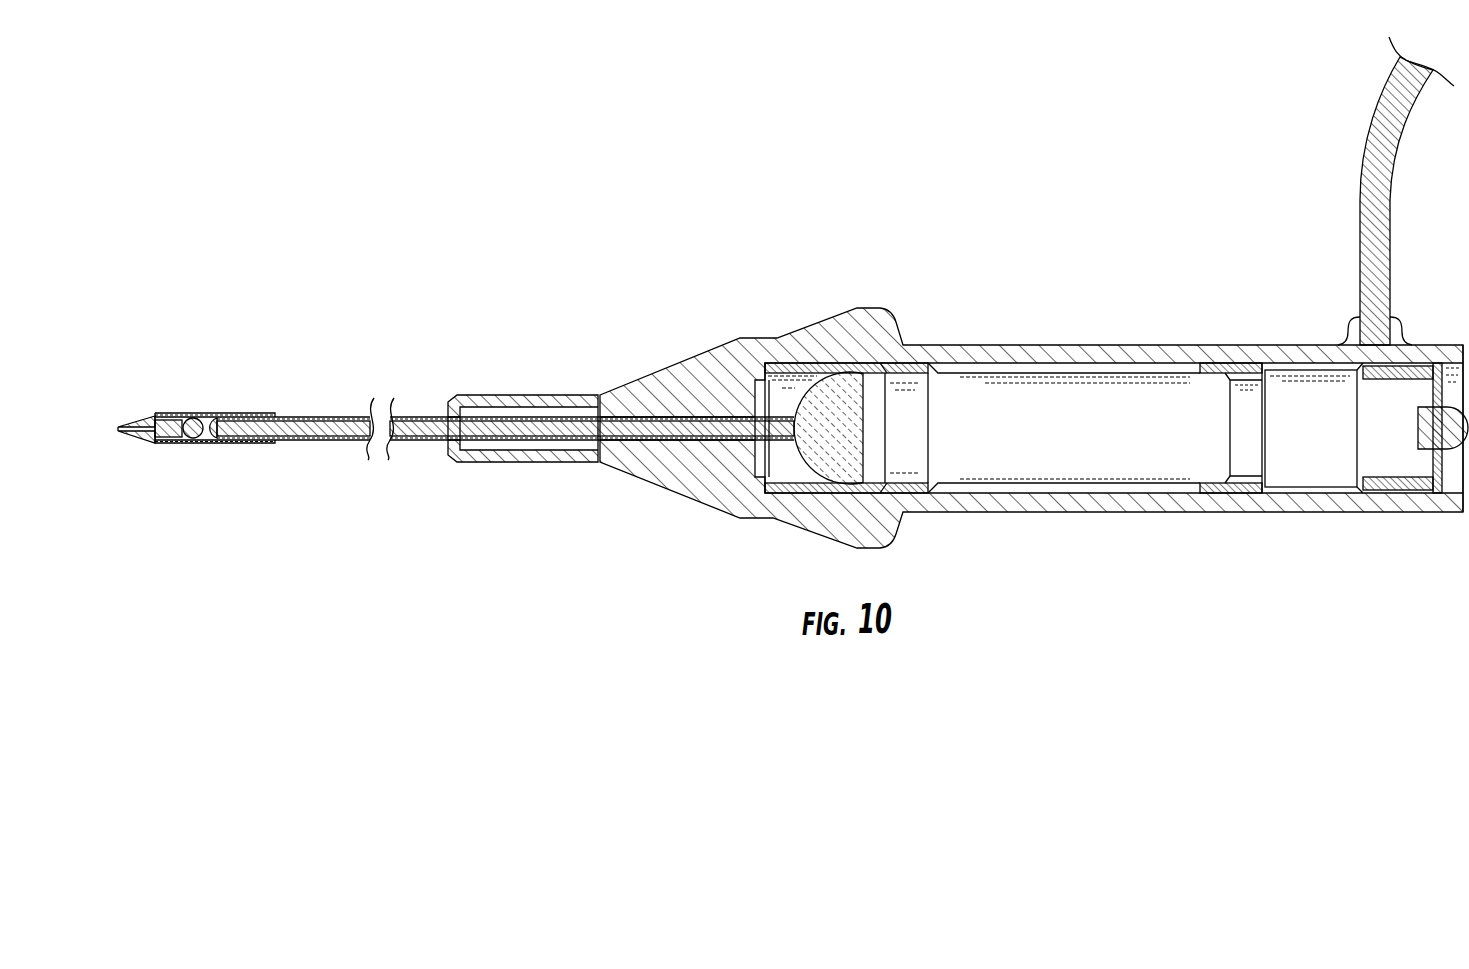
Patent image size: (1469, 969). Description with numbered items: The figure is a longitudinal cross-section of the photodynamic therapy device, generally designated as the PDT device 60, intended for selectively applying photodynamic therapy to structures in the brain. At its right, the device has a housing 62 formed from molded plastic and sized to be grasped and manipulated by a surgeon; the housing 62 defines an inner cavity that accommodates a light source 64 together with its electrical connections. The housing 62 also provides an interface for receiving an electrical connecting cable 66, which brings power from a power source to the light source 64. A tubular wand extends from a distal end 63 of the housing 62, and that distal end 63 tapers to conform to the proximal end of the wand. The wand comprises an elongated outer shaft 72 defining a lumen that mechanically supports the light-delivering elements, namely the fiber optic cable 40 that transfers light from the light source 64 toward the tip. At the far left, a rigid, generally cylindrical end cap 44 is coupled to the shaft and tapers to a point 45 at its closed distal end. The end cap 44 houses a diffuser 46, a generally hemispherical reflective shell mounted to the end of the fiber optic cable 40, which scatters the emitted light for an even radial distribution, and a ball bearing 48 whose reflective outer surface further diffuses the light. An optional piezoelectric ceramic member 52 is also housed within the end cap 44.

The fiber optic cable 40 is at (413, 428).
The end cap 44 is at (202, 413).
The point 45 is at (118, 427).
The diffuser 46 is at (212, 437).
The ball bearing 48 is at (195, 438).
The piezoelectric ceramic member 52 is at (167, 424).
The PDT device 60 is at (757, 300).
The housing 62 is at (1200, 512).
The distal end of the housing 63 is at (450, 462).
The light source 64 is at (1240, 375).
The electrical connecting cable 66 is at (1378, 200).
The outer shaft 72 is at (337, 442).